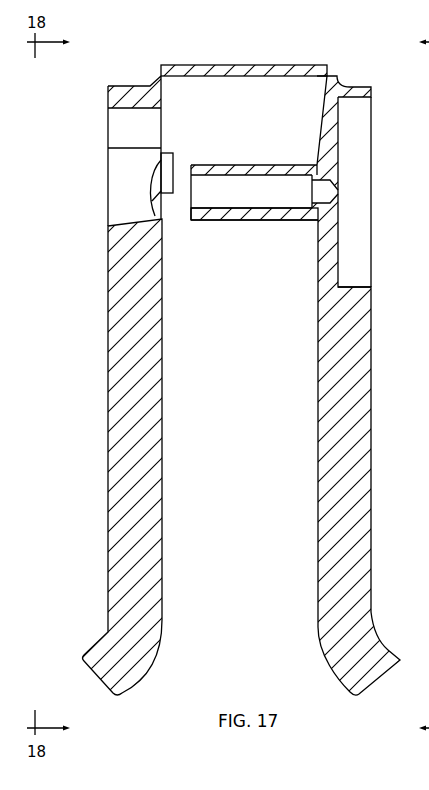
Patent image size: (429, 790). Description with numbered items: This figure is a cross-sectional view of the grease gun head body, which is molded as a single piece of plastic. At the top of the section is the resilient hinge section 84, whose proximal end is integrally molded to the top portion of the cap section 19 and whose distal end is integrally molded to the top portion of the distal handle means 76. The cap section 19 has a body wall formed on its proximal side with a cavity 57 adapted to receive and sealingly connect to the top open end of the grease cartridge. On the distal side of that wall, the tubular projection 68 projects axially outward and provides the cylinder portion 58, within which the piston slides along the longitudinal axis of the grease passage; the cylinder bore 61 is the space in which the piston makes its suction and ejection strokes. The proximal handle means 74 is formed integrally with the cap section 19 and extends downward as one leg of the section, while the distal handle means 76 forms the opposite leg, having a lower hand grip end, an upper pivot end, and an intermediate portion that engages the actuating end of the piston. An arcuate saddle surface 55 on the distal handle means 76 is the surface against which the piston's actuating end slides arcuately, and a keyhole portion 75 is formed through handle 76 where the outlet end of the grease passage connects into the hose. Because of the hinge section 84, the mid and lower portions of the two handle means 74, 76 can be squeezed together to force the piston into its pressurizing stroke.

The resilient hinge section 84 is at (199, 63).
The cavity 57 is at (352, 97).
The cap section 19 is at (339, 256).
The keyhole portion 75 is at (120, 171).
The arcuate saddle surface 55 is at (158, 206).
The tubular projection 68 is at (211, 165).
The cylinder portion 58 is at (281, 189).
The cylinder bore 61 is at (268, 208).
The distal handle means 76 is at (163, 498).
The proximal handle means 74 is at (372, 498).